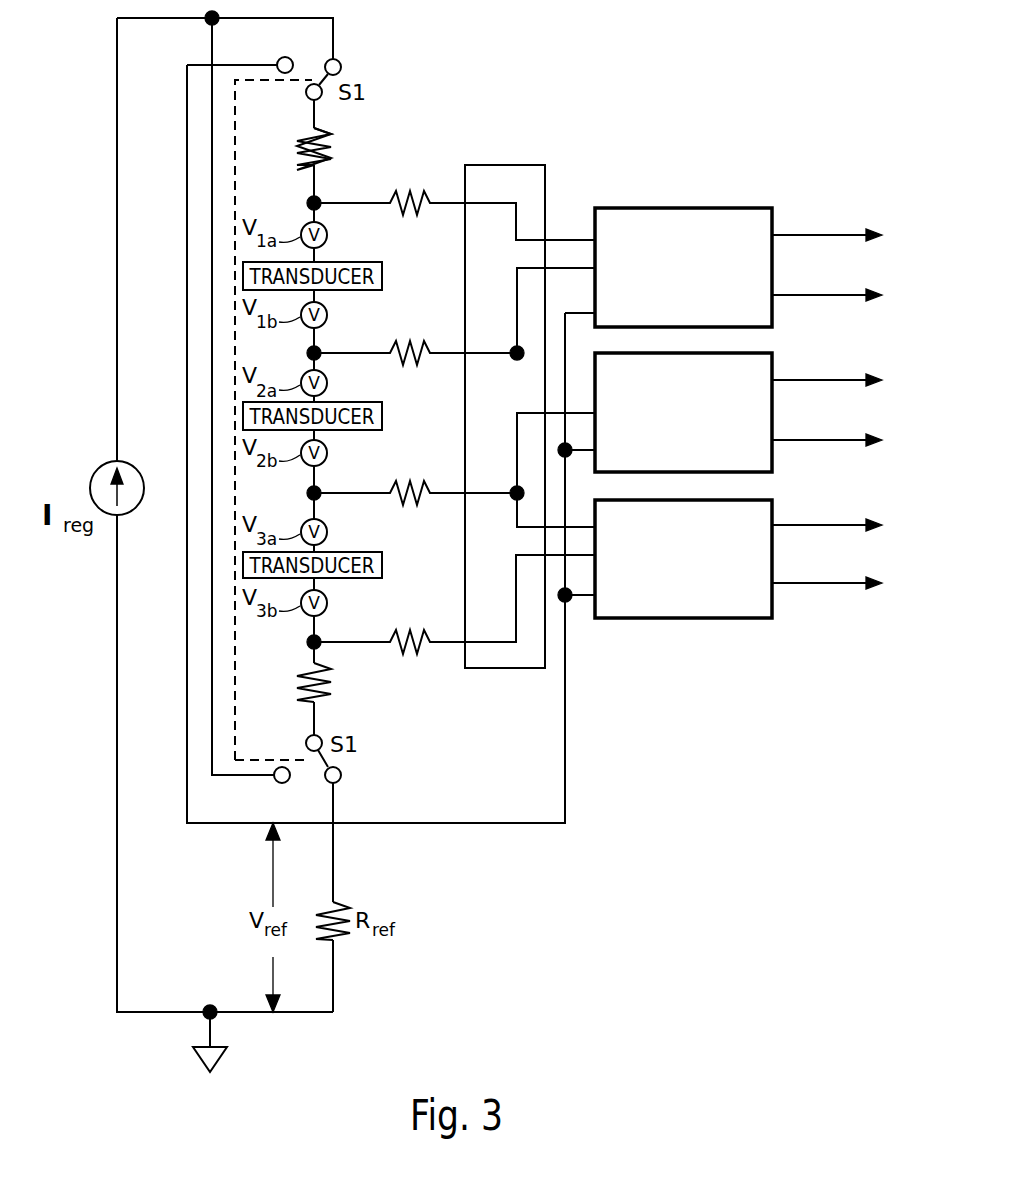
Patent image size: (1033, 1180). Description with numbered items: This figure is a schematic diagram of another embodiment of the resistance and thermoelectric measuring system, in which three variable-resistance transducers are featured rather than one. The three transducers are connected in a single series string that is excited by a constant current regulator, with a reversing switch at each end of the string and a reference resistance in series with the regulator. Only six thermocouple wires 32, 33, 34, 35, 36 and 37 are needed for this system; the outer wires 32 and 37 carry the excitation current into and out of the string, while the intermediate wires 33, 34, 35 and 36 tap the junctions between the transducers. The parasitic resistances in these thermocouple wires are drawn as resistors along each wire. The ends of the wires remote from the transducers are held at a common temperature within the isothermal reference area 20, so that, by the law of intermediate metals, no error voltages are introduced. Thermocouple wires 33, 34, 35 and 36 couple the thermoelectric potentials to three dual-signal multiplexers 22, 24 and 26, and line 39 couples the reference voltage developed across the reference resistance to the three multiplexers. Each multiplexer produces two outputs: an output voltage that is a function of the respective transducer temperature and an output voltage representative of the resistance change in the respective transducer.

The isothermal reference area 20 is at (484, 668).
The dual-signal multiplexer 22 is at (680, 209).
The dual-signal multiplexer 24 is at (689, 350).
The dual-signal multiplexer 26 is at (688, 500).
The thermocouple wire 32 is at (312, 175).
The thermocouple wire 33 is at (363, 208).
The thermocouple wire 34 is at (363, 358).
The thermocouple wire 35 is at (363, 498).
The thermocouple wire 36 is at (363, 647).
The thermocouple wire 37 is at (312, 656).
The line 39 is at (566, 705).